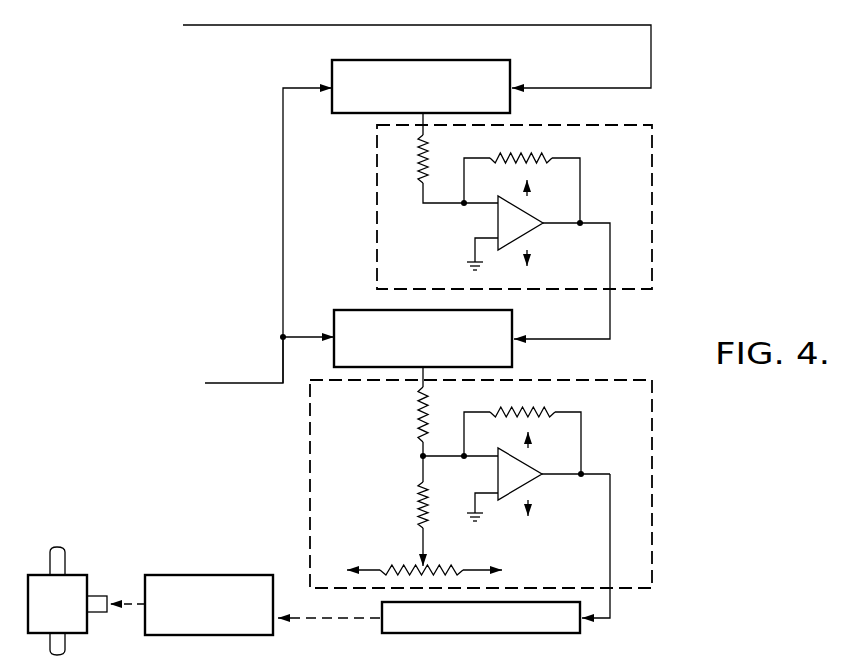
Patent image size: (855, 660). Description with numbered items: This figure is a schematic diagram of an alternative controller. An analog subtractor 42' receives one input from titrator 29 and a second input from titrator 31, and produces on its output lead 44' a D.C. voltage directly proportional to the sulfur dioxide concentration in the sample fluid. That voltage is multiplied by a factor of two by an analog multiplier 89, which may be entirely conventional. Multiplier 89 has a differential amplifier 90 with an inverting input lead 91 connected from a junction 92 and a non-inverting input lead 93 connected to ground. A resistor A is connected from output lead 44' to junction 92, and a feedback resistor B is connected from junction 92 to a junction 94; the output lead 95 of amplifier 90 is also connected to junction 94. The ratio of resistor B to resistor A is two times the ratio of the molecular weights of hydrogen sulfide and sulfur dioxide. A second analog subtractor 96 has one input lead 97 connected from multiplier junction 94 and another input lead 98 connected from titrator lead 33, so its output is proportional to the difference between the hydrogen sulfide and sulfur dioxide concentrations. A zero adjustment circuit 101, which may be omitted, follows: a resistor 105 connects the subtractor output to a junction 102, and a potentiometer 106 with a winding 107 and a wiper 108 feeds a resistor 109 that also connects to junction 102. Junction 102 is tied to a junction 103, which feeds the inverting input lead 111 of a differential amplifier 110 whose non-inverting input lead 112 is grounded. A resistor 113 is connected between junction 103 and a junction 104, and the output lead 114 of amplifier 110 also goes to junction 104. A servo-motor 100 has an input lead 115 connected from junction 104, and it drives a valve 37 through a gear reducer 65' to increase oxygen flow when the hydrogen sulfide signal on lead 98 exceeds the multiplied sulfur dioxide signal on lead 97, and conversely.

The titrator 29 is at (339, 50).
The titrator 31 is at (180, 251).
The titrator lead 33 is at (283, 367).
The analog subtractor 42' is at (431, 73).
The analog subtractor output lead 44' is at (362, 129).
The analog multiplier 89 is at (375, 248).
The resistor A is at (418, 152).
The feedback resistor B is at (548, 156).
The inverting input lead 91 is at (462, 206).
The junction 92 is at (466, 201).
The non-inverting input lead 93 is at (475, 240).
The junction 94 is at (582, 222).
The output lead 95 is at (548, 221).
The differential amplifier 90 is at (548, 236).
The analog subtractor 96 is at (520, 316).
The input lead 97 is at (575, 340).
The input lead 98 is at (296, 337).
The zero adjustment circuit 101 is at (308, 455).
The junction 102 is at (420, 456).
The junction 103 is at (466, 458).
The junction 104 is at (585, 474).
The resistor 105 is at (420, 418).
The potentiometer 106 is at (448, 556).
The winding 107 is at (418, 566).
The wiper 108 is at (428, 540).
The resistor 109 is at (420, 500).
The differential amplifier 110 is at (545, 482).
The inverting input lead 111 is at (497, 452).
The non-inverting input lead 112 is at (478, 497).
The resistor 113 is at (545, 410).
The output lead 114 is at (555, 474).
The input lead 115 is at (606, 618).
The servo-motor 100 is at (537, 634).
The gear reducer 65' is at (262, 588).
The valve 37 is at (76, 567).